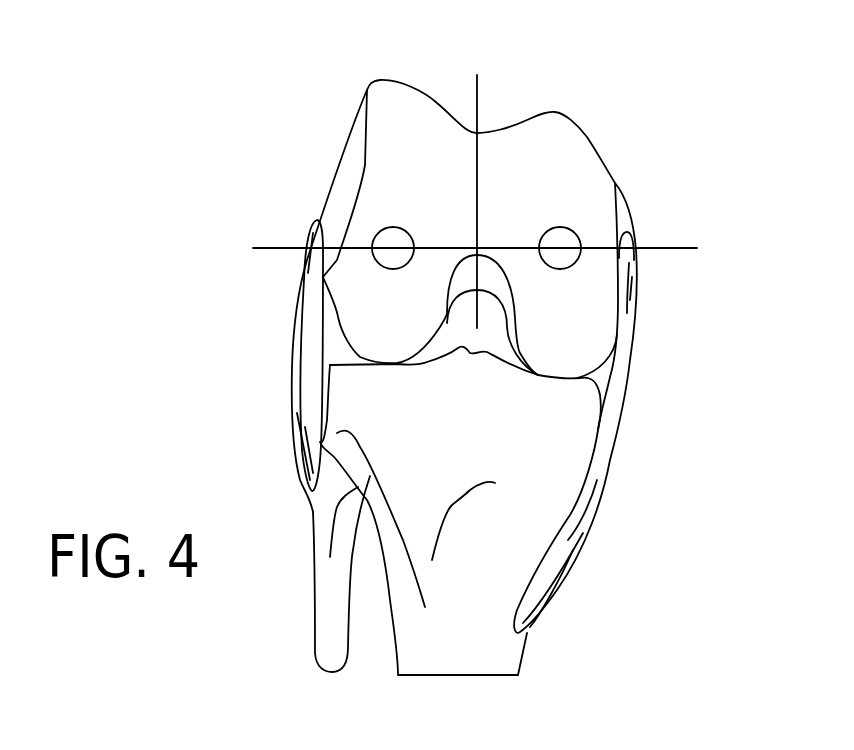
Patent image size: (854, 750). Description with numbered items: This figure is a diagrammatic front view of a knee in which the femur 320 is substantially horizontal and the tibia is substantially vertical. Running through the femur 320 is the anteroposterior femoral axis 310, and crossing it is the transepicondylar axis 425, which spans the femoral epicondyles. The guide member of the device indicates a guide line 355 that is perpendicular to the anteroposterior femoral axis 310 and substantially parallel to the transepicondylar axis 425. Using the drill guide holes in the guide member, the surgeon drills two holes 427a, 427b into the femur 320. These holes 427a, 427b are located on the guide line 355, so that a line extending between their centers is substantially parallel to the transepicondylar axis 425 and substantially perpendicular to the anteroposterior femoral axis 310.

The anteroposterior femoral axis 310 is at (472, 83).
The femur 320 is at (532, 136).
The transepicondylar axis 425 is at (270, 248).
The guide line 355 is at (677, 248).
The hole 427a is at (393, 226).
The hole 427b is at (565, 227).